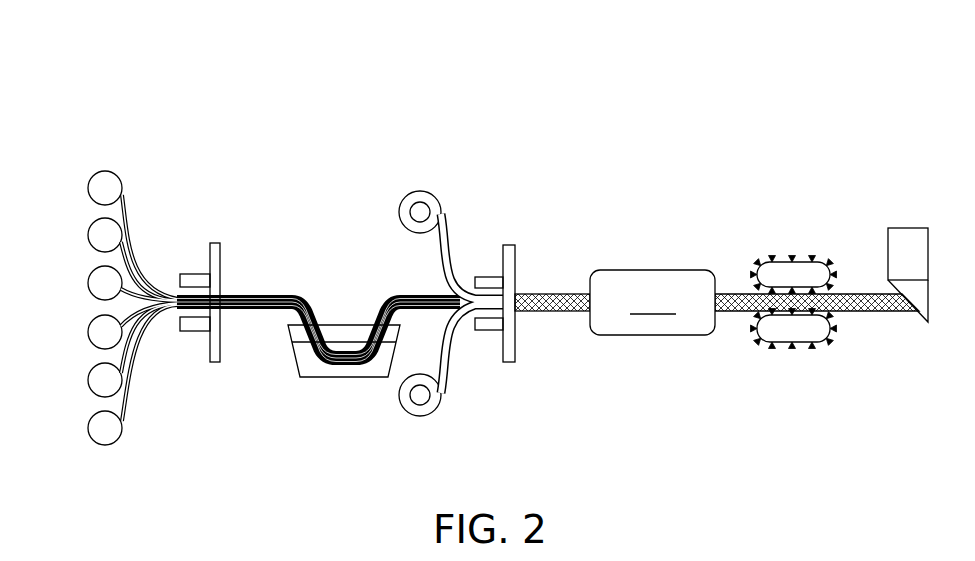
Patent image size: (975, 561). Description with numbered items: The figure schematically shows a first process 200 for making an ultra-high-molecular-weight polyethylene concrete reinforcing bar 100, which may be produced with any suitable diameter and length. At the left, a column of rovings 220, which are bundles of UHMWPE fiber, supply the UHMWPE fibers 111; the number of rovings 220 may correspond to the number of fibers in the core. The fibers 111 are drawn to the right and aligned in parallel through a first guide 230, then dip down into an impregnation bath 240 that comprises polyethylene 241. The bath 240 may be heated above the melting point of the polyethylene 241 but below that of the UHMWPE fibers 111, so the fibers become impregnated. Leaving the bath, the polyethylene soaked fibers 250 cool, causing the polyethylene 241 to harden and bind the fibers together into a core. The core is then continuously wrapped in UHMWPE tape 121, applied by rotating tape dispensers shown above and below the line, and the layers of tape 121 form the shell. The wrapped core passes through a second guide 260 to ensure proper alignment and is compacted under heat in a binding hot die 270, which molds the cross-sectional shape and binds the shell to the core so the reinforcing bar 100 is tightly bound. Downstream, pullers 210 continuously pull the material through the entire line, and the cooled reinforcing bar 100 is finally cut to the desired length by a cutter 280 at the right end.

The first process 200 is at (487, 280).
The rovings 220 is at (88, 184).
The UHMWPE fibers 111 is at (130, 206).
The first guide 230 is at (206, 339).
The polyethylene soaked fibers 250 is at (318, 281).
The impregnation bath 240 is at (309, 395).
The polyethylene 241 is at (344, 404).
The UHMWPE tape 121 is at (442, 234).
The second guide 260 is at (511, 358).
The binding hot die 270 is at (652, 302).
The pullers 210 is at (757, 264).
The cutter 280 is at (890, 222).
The reinforcing bar 100 is at (717, 371).